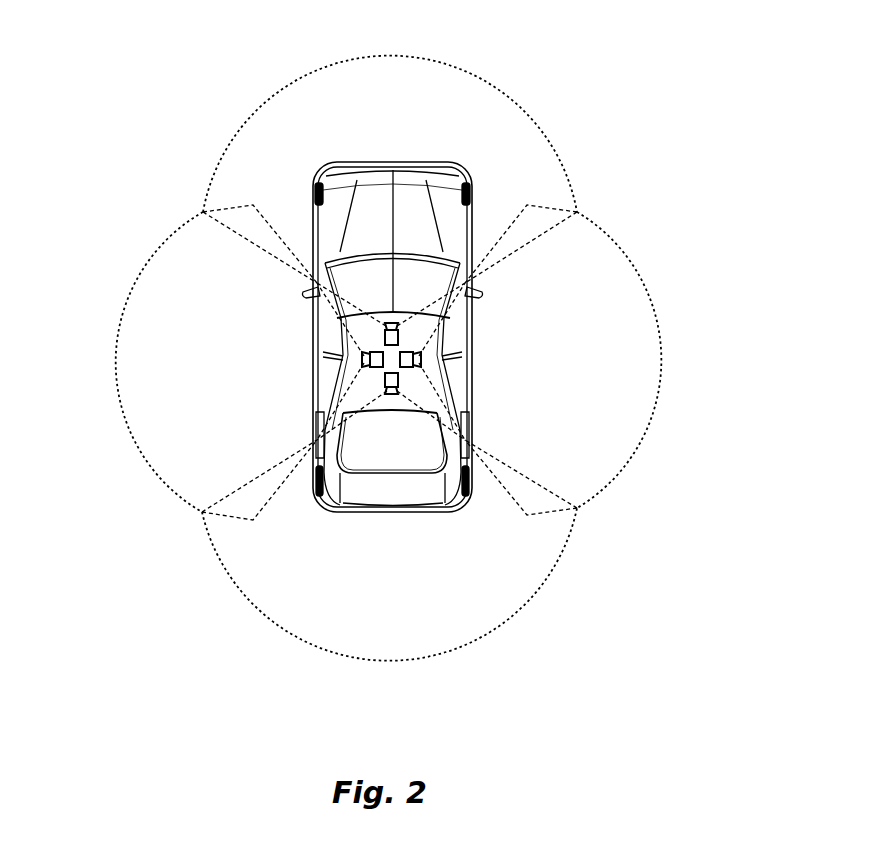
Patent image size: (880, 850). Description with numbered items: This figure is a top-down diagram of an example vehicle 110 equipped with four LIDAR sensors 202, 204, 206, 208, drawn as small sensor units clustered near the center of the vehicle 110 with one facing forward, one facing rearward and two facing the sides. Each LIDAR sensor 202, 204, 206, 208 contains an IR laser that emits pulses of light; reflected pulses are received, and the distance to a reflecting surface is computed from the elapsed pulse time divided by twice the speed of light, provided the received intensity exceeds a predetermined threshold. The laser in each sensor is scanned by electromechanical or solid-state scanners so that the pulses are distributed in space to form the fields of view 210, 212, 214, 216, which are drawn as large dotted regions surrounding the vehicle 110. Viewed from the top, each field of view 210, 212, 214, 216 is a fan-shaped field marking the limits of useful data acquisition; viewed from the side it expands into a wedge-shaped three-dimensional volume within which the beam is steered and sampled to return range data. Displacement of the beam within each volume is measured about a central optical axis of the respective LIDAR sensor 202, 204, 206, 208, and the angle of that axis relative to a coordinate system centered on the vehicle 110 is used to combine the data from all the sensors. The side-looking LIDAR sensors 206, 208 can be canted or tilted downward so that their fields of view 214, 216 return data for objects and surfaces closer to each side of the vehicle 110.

The vehicle 110 is at (430, 162).
The LIDAR sensor 202 is at (393, 322).
The LIDAR sensor 204 is at (392, 394).
The side-looking LIDAR sensor 206 is at (361, 360).
The side-looking LIDAR sensor 208 is at (423, 359).
The field of view 210 is at (273, 93).
The field of view 212 is at (235, 597).
The field of view 214 is at (163, 490).
The field of view 216 is at (603, 493).